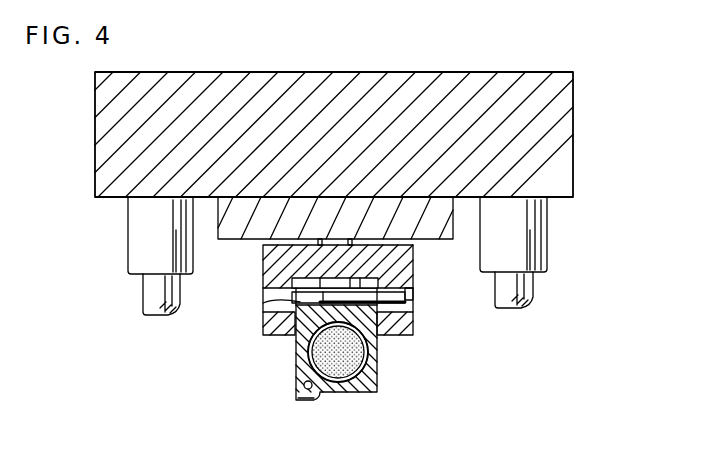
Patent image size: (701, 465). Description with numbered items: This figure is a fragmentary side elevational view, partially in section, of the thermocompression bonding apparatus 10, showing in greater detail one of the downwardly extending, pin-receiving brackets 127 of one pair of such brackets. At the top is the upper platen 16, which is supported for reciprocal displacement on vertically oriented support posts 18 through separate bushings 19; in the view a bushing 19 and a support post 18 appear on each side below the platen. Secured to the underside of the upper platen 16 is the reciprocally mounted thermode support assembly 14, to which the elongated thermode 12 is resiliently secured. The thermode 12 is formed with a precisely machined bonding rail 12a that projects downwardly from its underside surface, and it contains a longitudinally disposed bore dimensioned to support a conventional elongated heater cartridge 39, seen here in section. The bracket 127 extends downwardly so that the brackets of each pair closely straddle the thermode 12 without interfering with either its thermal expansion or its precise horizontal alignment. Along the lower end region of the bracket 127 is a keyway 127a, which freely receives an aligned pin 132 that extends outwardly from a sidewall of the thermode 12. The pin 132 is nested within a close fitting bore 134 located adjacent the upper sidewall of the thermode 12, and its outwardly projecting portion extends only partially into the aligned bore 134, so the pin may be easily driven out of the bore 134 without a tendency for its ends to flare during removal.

The thermocompression bonding apparatus 10 is at (553, 61).
The thermode 12 is at (292, 386).
The bonding rail 12a is at (307, 400).
The thermode support assembly 14 is at (236, 243).
The upper platen 16 is at (574, 146).
The support posts 18 is at (143, 301).
The bushings 19 is at (135, 243).
The heater cartridge 39 is at (378, 378).
The bracket 127 is at (270, 334).
The keyway 127a is at (413, 305).
The pin 132 is at (405, 296).
The bore 134 is at (263, 303).